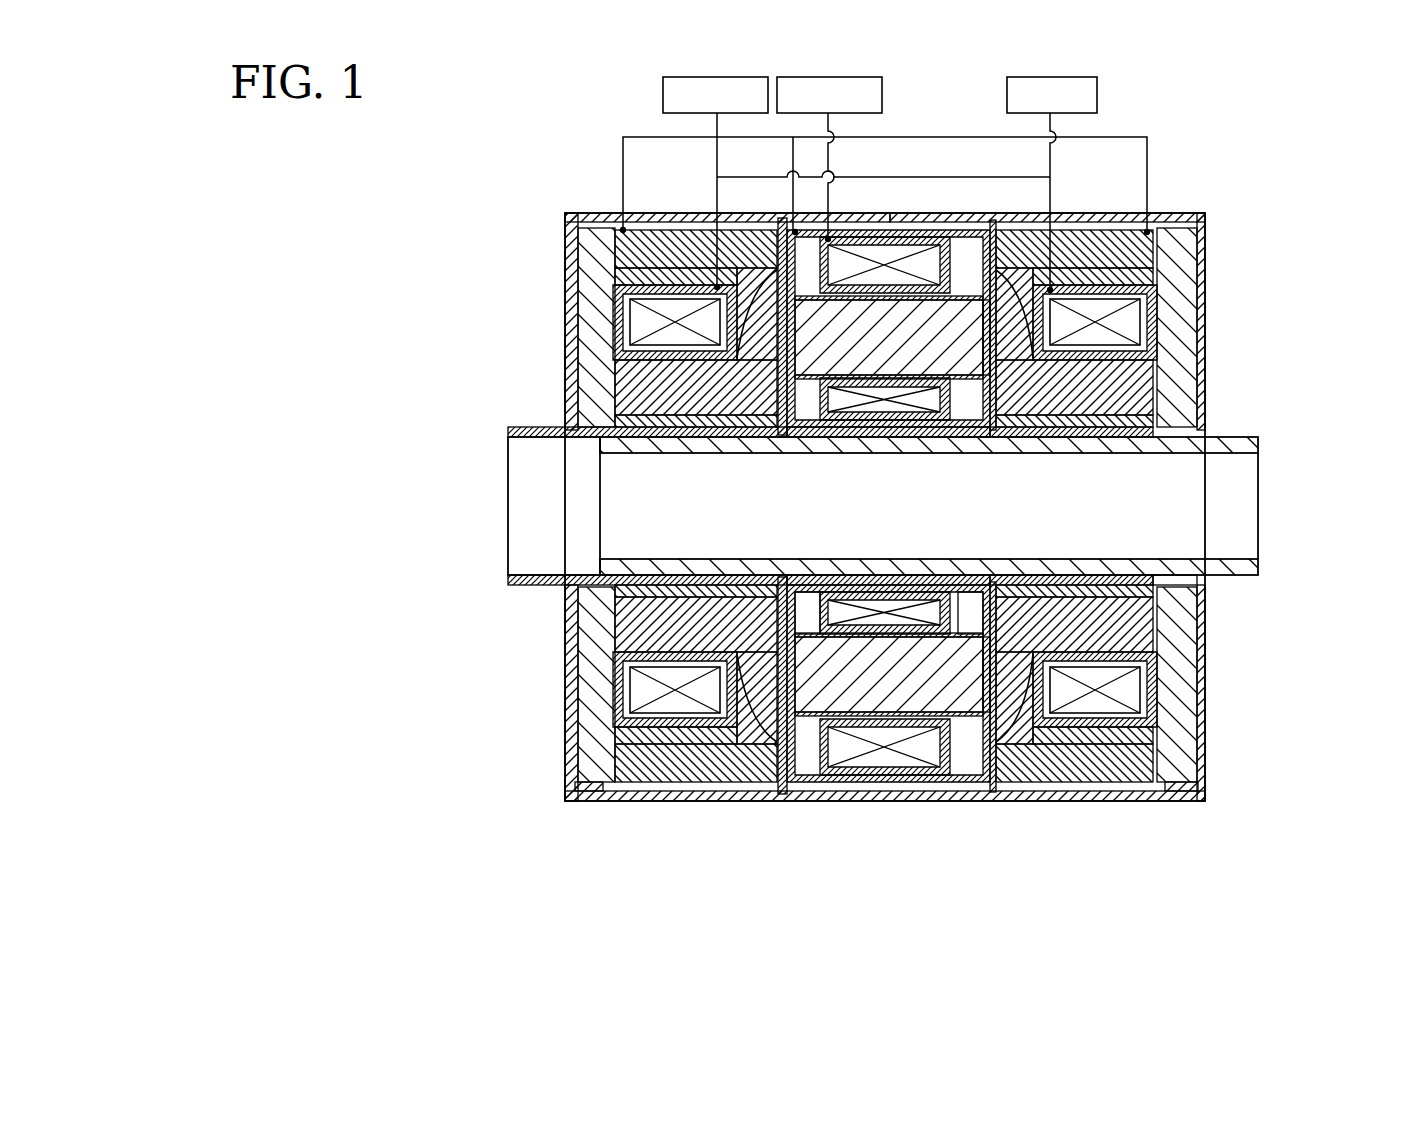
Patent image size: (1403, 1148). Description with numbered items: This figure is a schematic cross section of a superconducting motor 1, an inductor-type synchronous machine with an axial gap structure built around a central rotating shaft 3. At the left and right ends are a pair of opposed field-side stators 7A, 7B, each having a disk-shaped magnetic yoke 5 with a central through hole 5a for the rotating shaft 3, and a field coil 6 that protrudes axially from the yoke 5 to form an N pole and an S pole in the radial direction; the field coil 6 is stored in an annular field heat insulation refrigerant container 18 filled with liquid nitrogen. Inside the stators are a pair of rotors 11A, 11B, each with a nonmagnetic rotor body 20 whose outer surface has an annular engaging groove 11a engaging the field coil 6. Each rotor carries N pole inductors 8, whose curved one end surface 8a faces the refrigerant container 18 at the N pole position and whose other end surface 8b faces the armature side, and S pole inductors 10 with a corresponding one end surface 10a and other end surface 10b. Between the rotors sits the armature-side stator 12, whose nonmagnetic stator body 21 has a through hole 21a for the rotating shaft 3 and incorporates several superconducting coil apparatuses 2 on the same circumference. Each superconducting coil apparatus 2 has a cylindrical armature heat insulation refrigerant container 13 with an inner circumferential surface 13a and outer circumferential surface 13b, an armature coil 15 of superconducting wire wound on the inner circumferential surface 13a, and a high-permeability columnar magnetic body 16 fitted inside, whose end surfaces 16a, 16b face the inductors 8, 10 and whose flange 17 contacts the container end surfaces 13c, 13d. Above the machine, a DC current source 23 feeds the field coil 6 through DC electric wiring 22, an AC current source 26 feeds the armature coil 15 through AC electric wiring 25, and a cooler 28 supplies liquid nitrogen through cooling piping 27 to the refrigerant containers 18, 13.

The superconducting motor 1 is at (448, 160).
The superconducting coil apparatus 2 is at (972, 898).
The rotating shaft 3 is at (1252, 437).
The yoke 5 is at (573, 245).
The through hole 5a is at (1183, 582).
The field coil 6 is at (637, 692).
The field-side stator 7A is at (550, 205).
The field-side stator 7B is at (1202, 193).
The N pole inductor 8 is at (1150, 382).
The one end surface 8a is at (1110, 355).
The other end surface 8b is at (985, 313).
The S pole inductor 10 is at (625, 368).
The one end surface 10a is at (683, 355).
The other end surface 10b is at (777, 382).
The engaging groove 11a is at (650, 313).
The rotor 11A is at (693, 815).
The rotor 11B is at (1134, 815).
The armature-side stator 12 is at (818, 812).
The armature heat insulation refrigerant container 13 is at (1003, 858).
The inner circumferential surface 13a is at (952, 697).
The outer circumferential surface 13b is at (922, 778).
The end surface 13c is at (800, 650).
The end surface 13d is at (1000, 600).
The armature coil 15 is at (885, 762).
The columnar magnetic body 16 is at (813, 702).
The end surface 16a is at (752, 655).
The end surface 16b is at (1025, 650).
The flange 17 is at (1003, 675).
The field heat insulation refrigerant container 18 is at (625, 668).
The rotor body 20 is at (657, 577).
The stator body 21 is at (790, 790).
The through hole 21a is at (927, 437).
The DC electric wiring 22 is at (1050, 160).
The DC current source 23 is at (1097, 93).
The AC electric wiring 25 is at (828, 154).
The AC current source 26 is at (882, 93).
The cooling piping 27 is at (622, 160).
The cooler 28 is at (663, 98).